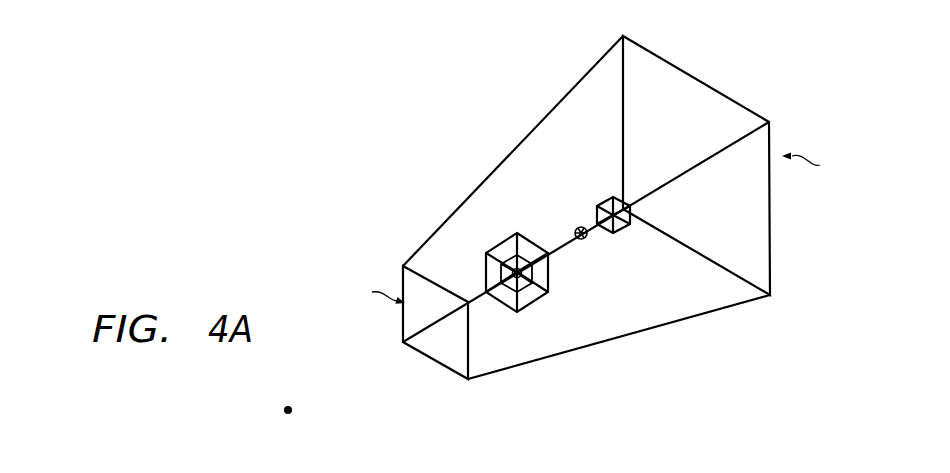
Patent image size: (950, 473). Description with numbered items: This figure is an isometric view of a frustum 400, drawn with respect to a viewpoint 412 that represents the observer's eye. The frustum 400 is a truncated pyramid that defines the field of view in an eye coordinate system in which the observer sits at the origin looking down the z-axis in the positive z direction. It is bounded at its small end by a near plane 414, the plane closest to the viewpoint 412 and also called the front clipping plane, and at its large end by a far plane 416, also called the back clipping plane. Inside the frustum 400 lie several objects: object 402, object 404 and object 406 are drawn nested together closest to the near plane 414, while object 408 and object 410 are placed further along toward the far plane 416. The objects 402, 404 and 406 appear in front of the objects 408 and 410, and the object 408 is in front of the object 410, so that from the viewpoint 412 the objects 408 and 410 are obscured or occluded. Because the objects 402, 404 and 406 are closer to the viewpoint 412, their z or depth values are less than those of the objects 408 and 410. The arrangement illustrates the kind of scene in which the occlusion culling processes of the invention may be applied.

The frustum 400 is at (433, 143).
The object 402 is at (520, 268).
The object 404 is at (500, 243).
The object 406 is at (524, 286).
The object 408 is at (584, 240).
The object 410 is at (605, 202).
The viewpoint 412 is at (285, 409).
The near plane 414 is at (420, 363).
The far plane 416 is at (790, 231).